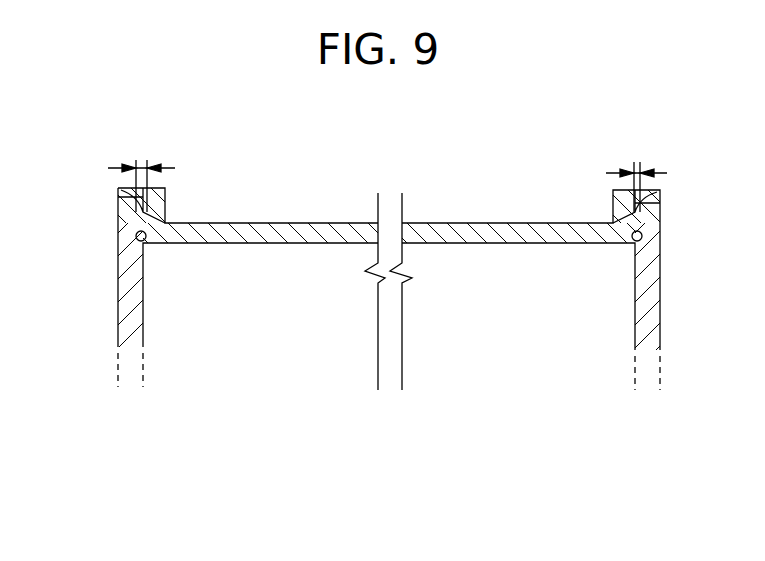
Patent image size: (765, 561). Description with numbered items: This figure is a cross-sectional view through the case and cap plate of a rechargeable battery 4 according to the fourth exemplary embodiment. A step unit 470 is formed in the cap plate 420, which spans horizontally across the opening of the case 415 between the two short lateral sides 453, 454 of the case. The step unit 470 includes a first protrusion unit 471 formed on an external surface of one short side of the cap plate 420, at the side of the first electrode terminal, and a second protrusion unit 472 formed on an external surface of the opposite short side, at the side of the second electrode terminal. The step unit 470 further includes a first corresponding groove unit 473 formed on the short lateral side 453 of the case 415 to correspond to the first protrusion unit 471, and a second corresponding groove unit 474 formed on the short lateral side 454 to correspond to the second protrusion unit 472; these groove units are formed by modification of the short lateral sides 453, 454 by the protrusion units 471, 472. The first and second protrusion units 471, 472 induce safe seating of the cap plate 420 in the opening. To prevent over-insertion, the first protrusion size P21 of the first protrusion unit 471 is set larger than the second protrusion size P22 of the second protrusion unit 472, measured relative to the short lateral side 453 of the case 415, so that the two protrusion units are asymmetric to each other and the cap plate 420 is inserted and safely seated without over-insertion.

The rechargeable battery 4 is at (393, 142).
The case 415 is at (107, 404).
The cap plate 420 is at (290, 222).
The short lateral side 453 is at (118, 305).
The short lateral side 454 is at (660, 306).
The step unit 470 is at (565, 512).
The first protrusion unit 471 is at (121, 190).
The second protrusion unit 472 is at (642, 230).
The first corresponding groove unit 473 is at (143, 241).
The second corresponding groove unit 474 is at (640, 250).
The first protrusion size P21 is at (141, 175).
The second protrusion size P22 is at (636, 176).